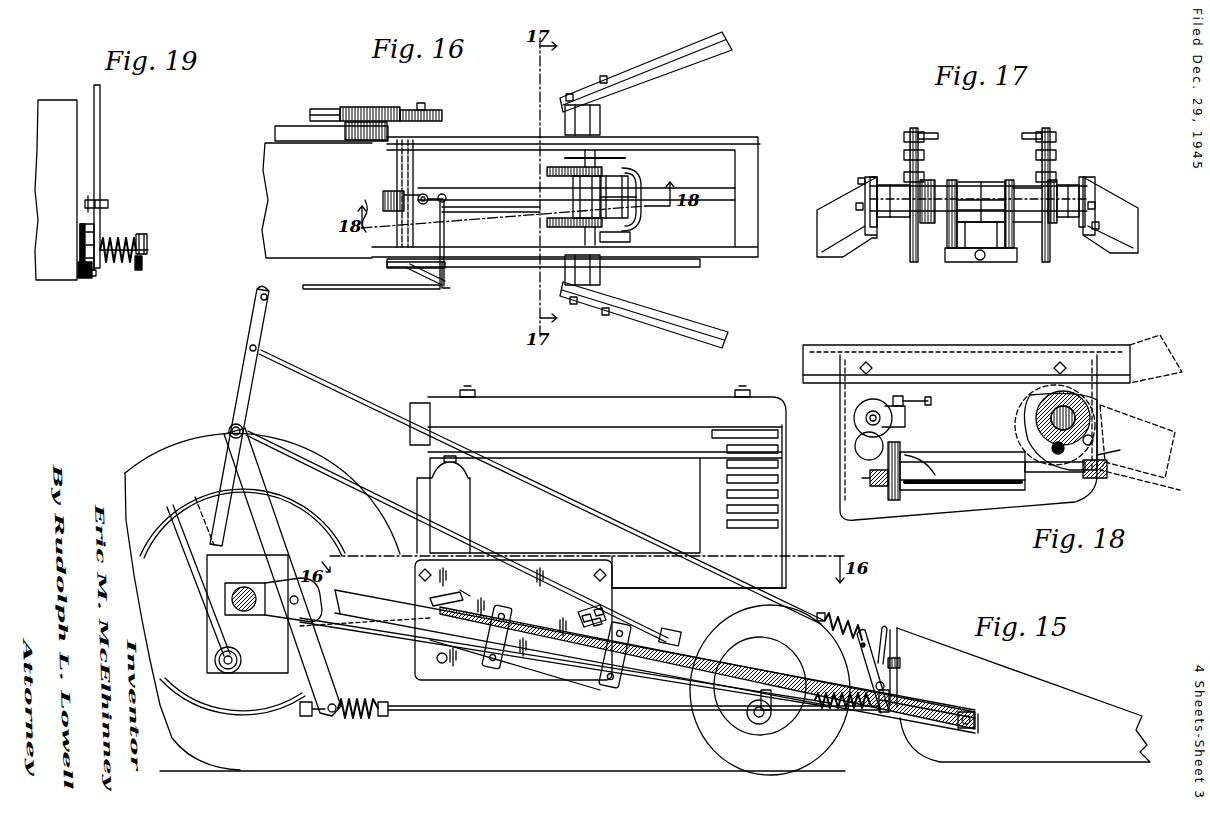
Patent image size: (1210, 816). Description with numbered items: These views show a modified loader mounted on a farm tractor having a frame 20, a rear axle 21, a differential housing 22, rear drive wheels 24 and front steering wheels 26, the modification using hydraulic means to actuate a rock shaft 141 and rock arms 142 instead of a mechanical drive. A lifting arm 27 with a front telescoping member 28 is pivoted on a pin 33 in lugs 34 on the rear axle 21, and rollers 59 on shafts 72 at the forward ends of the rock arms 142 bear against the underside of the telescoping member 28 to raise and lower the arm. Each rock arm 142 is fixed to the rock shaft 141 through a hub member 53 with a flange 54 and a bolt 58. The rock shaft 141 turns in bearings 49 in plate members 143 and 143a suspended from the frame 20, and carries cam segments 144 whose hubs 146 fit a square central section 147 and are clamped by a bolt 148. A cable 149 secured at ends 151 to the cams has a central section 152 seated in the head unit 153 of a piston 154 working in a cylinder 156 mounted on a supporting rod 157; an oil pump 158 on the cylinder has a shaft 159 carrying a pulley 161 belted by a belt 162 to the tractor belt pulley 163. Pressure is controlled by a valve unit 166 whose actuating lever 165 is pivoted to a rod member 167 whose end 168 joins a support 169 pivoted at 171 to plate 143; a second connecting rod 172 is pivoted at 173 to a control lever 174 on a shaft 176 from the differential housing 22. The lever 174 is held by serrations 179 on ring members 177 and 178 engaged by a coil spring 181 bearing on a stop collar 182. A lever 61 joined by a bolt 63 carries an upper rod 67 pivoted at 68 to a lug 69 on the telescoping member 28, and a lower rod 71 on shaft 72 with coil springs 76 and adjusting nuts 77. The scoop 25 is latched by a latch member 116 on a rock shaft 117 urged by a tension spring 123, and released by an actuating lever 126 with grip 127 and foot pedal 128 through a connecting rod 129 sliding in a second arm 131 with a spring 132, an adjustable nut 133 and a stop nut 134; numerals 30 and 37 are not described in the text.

In FIG. 16, the frame 20 is at (760, 142).
In FIG. 17, the frame 20 is at (920, 141).
In FIG. 18, the frame 20 is at (826, 355).
In FIG. 15, the frame 20 is at (646, 573).
In FIG. 15, the rear axle 21 is at (243, 588).
In FIG. 19, the differential housing 22 is at (58, 110).
In FIG. 15, the differential housing 22 is at (197, 618).
In FIG. 15, the rear drive wheels 24 is at (196, 444).
In FIG. 15, the scoop 25 is at (1050, 702).
In FIG. 15, the front steering wheels 26 is at (792, 606).
In FIG. 15, the lifting arm 27 is at (655, 717).
In FIG. 15, the front telescoping member 28 is at (892, 718).
In FIG. 15, the beam end bracket 30 is at (976, 729).
In FIG. 15, the pin 33 is at (292, 605).
In FIG. 15, the lugs 34 is at (282, 616).
In FIG. 15, the clamp 37 is at (595, 690).
In FIG. 16, the bearings 49 is at (600, 152).
In FIG. 17, the bearings 49 is at (927, 225).
In FIG. 16, the hub member 53 is at (576, 112).
In FIG. 17, the hub member 53 is at (890, 220).
In FIG. 16, the flange 54 is at (603, 75).
In FIG. 17, the flange 54 is at (860, 178).
In FIG. 16, the bolt 58 is at (580, 93).
In FIG. 17, the bolt 58 is at (857, 211).
In FIG. 15, the rollers 59 is at (769, 721).
In FIG. 15, the lever 61 is at (281, 540).
In FIG. 15, the bolt 63 is at (231, 427).
In FIG. 15, the upper rod 67 is at (335, 481).
In FIG. 15, the pivotal connection 68 is at (690, 641).
In FIG. 15, the upright lug 69 is at (718, 648).
In FIG. 15, the lower rod 71 is at (600, 712).
In FIG. 15, the shaft 72 is at (758, 724).
In FIG. 15, the coil springs 76 is at (358, 720).
In FIG. 15, the adjusting nuts 77 is at (384, 718).
In FIG. 15, the latch member 116 is at (888, 629).
In FIG. 15, the rock shaft 117 is at (893, 687).
In FIG. 15, the tension spring 123 is at (861, 709).
In FIG. 15, the actuating lever 126 is at (237, 416).
In FIG. 15, the manual grip 127 is at (262, 296).
In FIG. 15, the foot pedal 128 is at (209, 522).
In FIG. 15, the connecting rod 129 is at (320, 378).
In FIG. 15, the second arm 131 is at (858, 643).
In FIG. 15, the spring 132 is at (840, 628).
In FIG. 15, the adjustable nut 133 is at (827, 618).
In FIG. 15, the adjustable stop nut 134 is at (902, 663).
In FIG. 16, the rock shaft 141 is at (617, 160).
In FIG. 16, the rock arms 142 is at (686, 70).
In FIG. 17, the rock arms 142 is at (838, 205).
In FIG. 18, the rock arms 142 is at (1162, 485).
In FIG. 15, the rock arms 142 is at (718, 702).
In FIG. 16, the plate member 143 is at (488, 268).
In FIG. 17, the plate member 143 is at (1050, 131).
In FIG. 15, the plate member 143 is at (568, 578).
In FIG. 16, the plate member 143a is at (470, 137).
In FIG. 17, the plate member 143a is at (912, 131).
In FIG. 18, the plate member 143a is at (958, 507).
In FIG. 17, the cam segments 144 is at (947, 186).
In FIG. 18, the cam segments 144 is at (1036, 413).
In FIG. 16, the hubs 146 is at (574, 197).
In FIG. 17, the hubs 146 is at (990, 182).
In FIG. 18, the hubs 146 is at (1086, 414).
In FIG. 18, the square central section 147 is at (1058, 392).
In FIG. 17, the bolt 148 is at (1018, 240).
In FIG. 18, the bolt 148 is at (1050, 448).
In FIG. 16, the cable or chain 149 is at (615, 226).
In FIG. 17, the cable or chain 149 is at (1062, 200).
In FIG. 18, the cable or chain 149 is at (1032, 398).
In FIG. 18, the ends 151 is at (1067, 391).
In FIG. 16, the central section 152 is at (632, 173).
In FIG. 18, the central section 152 is at (1104, 459).
In FIG. 16, the head unit 153 is at (641, 178).
In FIG. 18, the head unit 153 is at (1100, 479).
In FIG. 16, the piston 154 is at (624, 198).
In FIG. 18, the piston 154 is at (1043, 474).
In FIG. 16, the cylinder 156 is at (520, 187).
In FIG. 18, the cylinder 156 is at (960, 452).
In FIG. 16, the supporting rod 157 is at (400, 171).
In FIG. 18, the supporting rod 157 is at (880, 488).
In FIG. 15, the supporting rod 157 is at (443, 664).
In FIG. 18, the oil pump 158 is at (874, 413).
In FIG. 16, the shaft 159 is at (393, 161).
In FIG. 16, the pulley 161 is at (412, 108).
In FIG. 16, the belt 162 is at (366, 112).
In FIG. 16, the belt pulley 163 is at (330, 108).
In FIG. 16, the actuating lever 165 is at (442, 197).
In FIG. 18, the actuating lever 165 is at (912, 396).
In FIG. 16, the valve unit 166 is at (425, 196).
In FIG. 16, the rod member 167 is at (448, 236).
In FIG. 18, the rod member 167 is at (929, 400).
In FIG. 16, the rod end 168 is at (445, 290).
In FIG. 15, the rod end 168 is at (464, 597).
In FIG. 16, the support 169 is at (430, 288).
In FIG. 15, the support 169 is at (446, 598).
In FIG. 16, the pivot 171 is at (422, 272).
In FIG. 16, the second connecting rod 172 is at (338, 290).
In FIG. 15, the second connecting rod 172 is at (328, 618).
In FIG. 19, the pivot 173 is at (102, 200).
In FIG. 15, the pivot 173 is at (220, 660).
In FIG. 19, the control lever 174 is at (100, 137).
In FIG. 15, the control lever 174 is at (190, 546).
In FIG. 19, the shaft 176 is at (148, 246).
In FIG. 15, the shaft 176 is at (228, 669).
In FIG. 19, the ring member 177 is at (82, 266).
In FIG. 19, the second ring member 178 is at (96, 236).
In FIG. 19, the serrations 179 is at (89, 277).
In FIG. 19, the coil spring 181 is at (122, 244).
In FIG. 19, the stop collar 182 is at (143, 265).